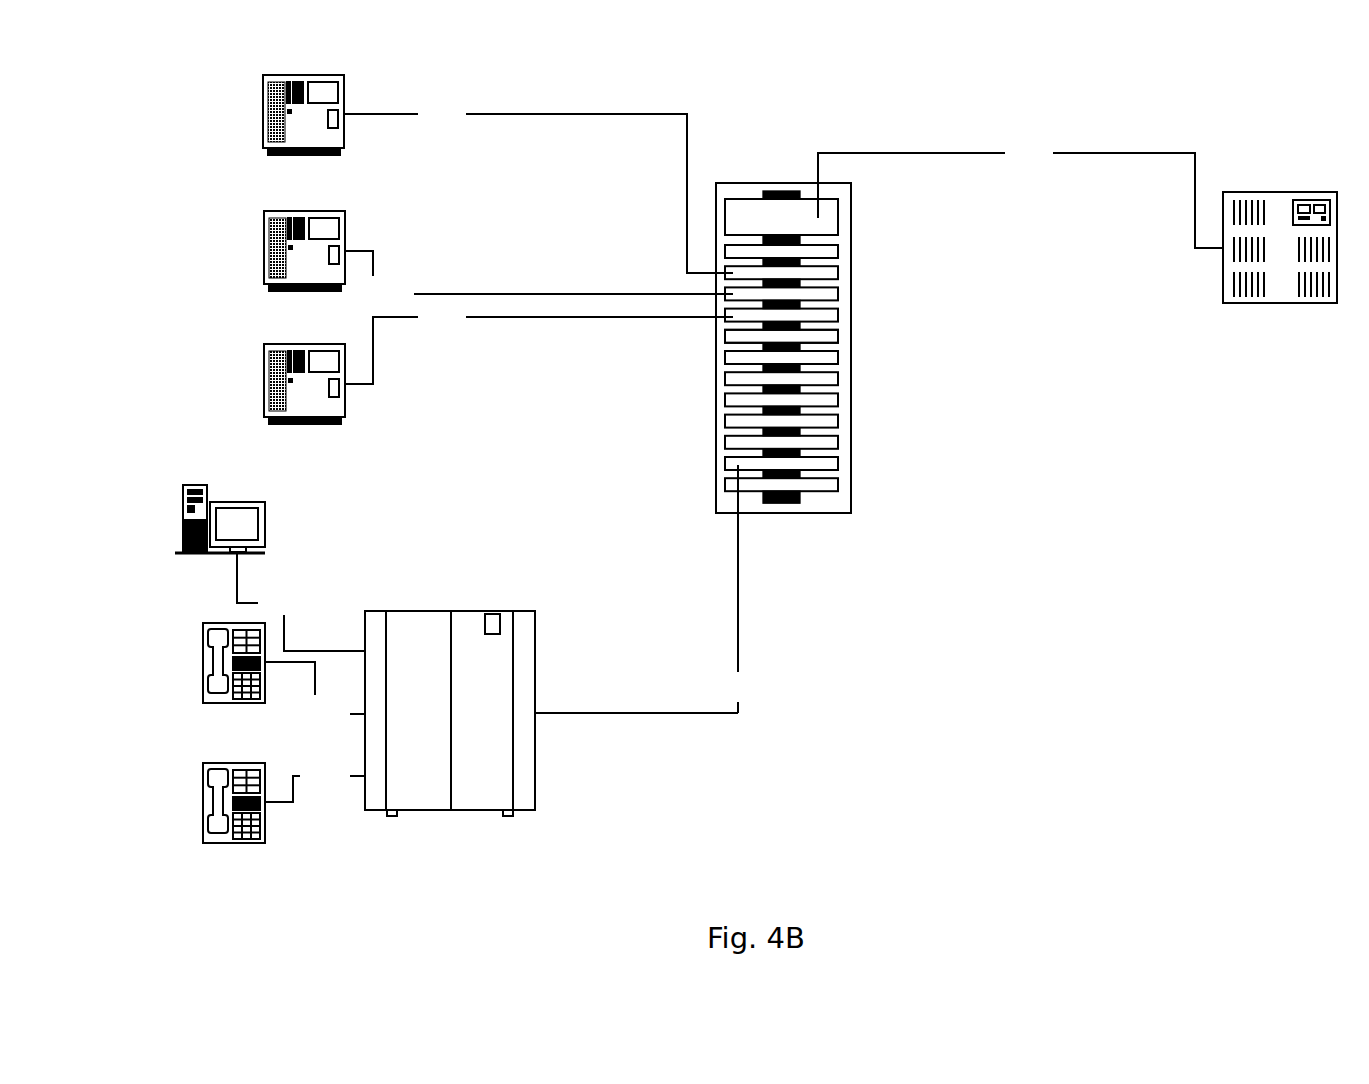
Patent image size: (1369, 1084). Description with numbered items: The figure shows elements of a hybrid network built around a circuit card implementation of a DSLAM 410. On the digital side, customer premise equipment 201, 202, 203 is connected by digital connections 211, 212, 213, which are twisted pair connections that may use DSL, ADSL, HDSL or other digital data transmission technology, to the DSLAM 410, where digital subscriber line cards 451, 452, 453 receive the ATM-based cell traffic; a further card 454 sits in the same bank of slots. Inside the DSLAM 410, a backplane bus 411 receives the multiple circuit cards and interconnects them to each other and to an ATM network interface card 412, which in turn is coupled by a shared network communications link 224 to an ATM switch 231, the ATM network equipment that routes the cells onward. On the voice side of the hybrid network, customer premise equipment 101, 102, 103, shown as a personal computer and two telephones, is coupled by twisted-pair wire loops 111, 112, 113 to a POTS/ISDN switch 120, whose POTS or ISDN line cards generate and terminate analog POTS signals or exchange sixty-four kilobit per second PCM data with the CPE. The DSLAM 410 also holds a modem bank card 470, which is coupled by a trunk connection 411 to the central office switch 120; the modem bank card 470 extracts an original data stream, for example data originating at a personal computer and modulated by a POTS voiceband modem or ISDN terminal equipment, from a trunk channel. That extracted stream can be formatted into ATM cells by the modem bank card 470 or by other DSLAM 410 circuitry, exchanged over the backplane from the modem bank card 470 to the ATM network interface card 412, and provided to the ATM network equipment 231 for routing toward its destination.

The customer premise equipment 101 is at (185, 515).
The customer premise equipment 102 is at (204, 660).
The customer premise equipment 103 is at (204, 798).
The twisted-pair wire loop 111 is at (301, 602).
The twisted-pair wire loop 112 is at (315, 696).
The twisted-pair wire loop 113 is at (315, 780).
The POTS/ISDN switch 120 is at (450, 815).
The customer premise equipment 201 is at (262, 113).
The customer premise equipment 202 is at (263, 253).
The customer premise equipment 203 is at (263, 389).
The digital connection 211 is at (538, 185).
The digital connection 212 is at (539, 281).
The digital connection 213 is at (539, 342).
The shared network communications link 224 is at (1020, 192).
The ATM switch 231 is at (1278, 192).
The DSLAM 410 is at (793, 420).
The backplane bus 411 is at (783, 505).
The ATM network interface card 412 is at (737, 220).
The digital subscriber line card 451 is at (832, 274).
The digital subscriber line card 452 is at (832, 295).
The digital subscriber line card 453 is at (832, 316).
The digital subscriber line card 454 is at (832, 339).
The modem bank card 470 is at (832, 465).